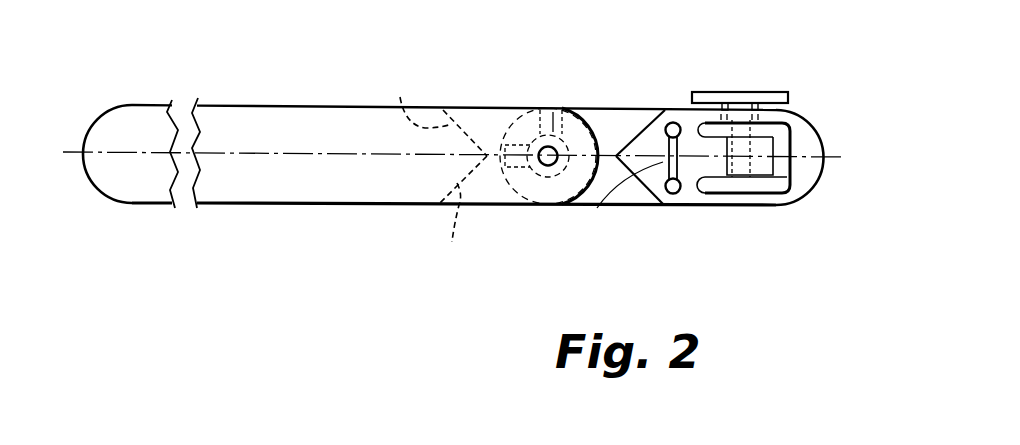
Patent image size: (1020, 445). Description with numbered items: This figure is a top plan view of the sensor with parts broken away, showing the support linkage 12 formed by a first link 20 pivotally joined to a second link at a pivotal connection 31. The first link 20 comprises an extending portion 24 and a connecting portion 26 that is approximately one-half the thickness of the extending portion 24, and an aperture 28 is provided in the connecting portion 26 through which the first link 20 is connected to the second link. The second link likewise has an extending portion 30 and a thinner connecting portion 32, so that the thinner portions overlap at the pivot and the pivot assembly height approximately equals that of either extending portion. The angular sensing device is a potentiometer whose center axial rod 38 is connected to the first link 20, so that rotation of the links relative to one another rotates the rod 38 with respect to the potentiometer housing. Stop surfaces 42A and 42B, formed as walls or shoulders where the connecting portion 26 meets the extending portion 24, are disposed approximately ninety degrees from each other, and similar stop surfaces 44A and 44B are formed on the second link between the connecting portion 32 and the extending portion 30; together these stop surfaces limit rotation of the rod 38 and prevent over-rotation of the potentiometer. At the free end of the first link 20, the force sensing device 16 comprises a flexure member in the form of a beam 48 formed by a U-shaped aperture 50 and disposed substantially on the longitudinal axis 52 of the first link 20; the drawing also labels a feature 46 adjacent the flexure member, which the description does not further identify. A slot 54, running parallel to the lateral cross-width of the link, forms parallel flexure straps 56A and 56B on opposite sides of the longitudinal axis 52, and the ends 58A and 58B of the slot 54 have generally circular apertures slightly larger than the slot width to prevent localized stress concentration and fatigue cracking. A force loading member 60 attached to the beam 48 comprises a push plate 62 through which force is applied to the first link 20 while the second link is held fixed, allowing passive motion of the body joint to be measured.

The support linkage 12 is at (429, 220).
The force sensing device 16 is at (772, 76).
The first link 20 is at (735, 220).
The extending portion 24 is at (793, 110).
The connecting portion 26 is at (565, 110).
The aperture 28 is at (560, 108).
The extending portion 30 is at (212, 105).
The pivotal connection 31 is at (527, 208).
The connecting portion 32 is at (452, 108).
The center axial rod 38 is at (540, 148).
The stop surface 42A is at (646, 192).
The stop surface 42B is at (637, 132).
The stop surface 44A is at (449, 215).
The stop surface 44B is at (409, 100).
The clip arm 46 is at (752, 191).
The beam 48 is at (783, 198).
The U-shaped aperture 50 is at (790, 172).
The longitudinal axis 52 is at (823, 147).
The slot 54 is at (597, 208).
The flexure strap 56A is at (689, 193).
The flexure strap 56B is at (689, 127).
The slot end 58A is at (672, 195).
The slot end 58B is at (668, 118).
The force loading member 60 is at (752, 91).
The push plate 62 is at (699, 91).